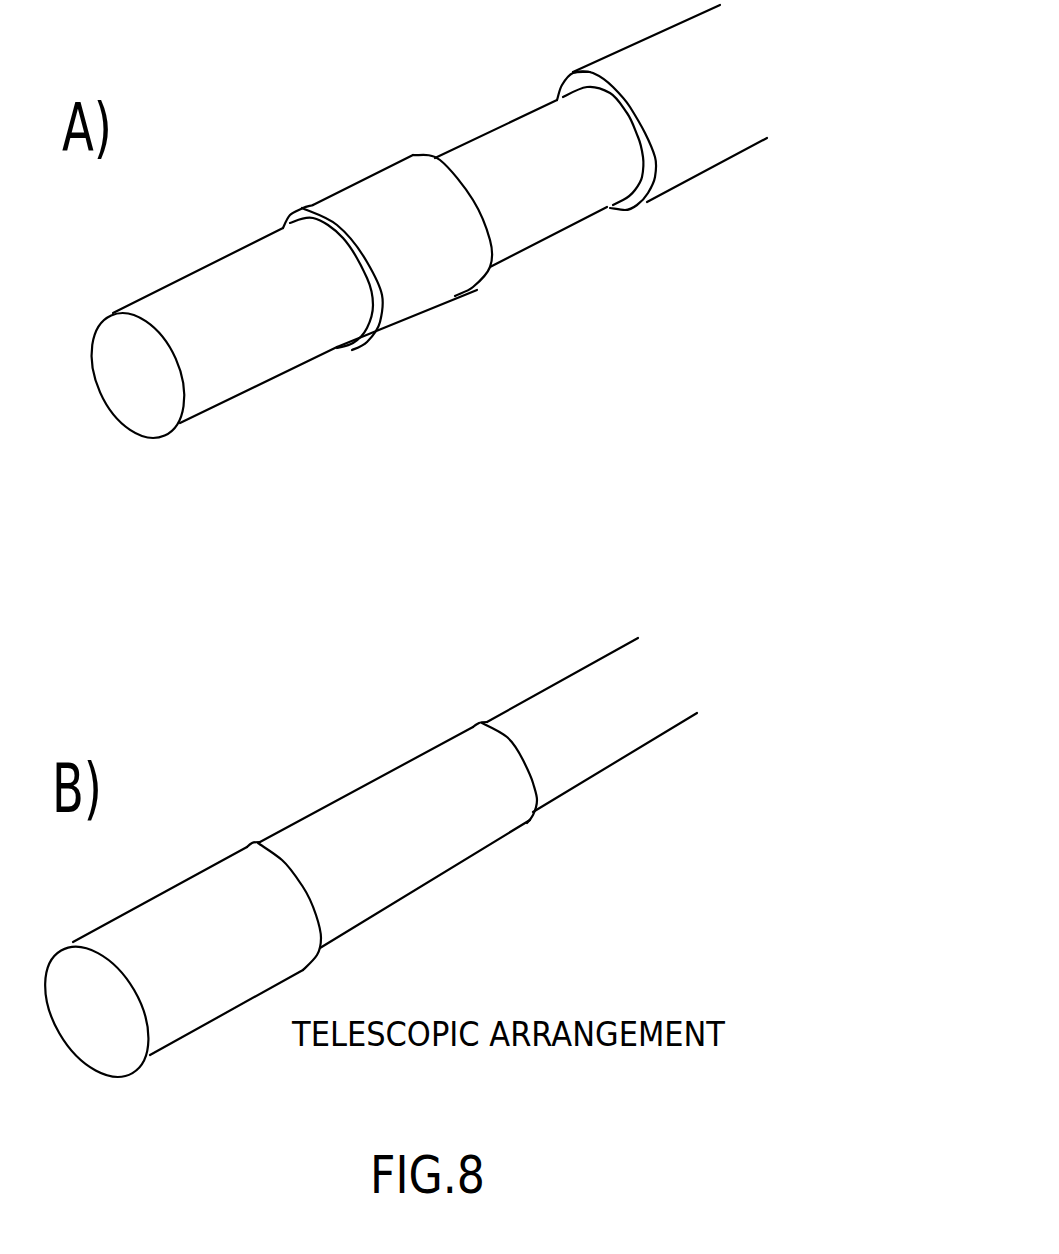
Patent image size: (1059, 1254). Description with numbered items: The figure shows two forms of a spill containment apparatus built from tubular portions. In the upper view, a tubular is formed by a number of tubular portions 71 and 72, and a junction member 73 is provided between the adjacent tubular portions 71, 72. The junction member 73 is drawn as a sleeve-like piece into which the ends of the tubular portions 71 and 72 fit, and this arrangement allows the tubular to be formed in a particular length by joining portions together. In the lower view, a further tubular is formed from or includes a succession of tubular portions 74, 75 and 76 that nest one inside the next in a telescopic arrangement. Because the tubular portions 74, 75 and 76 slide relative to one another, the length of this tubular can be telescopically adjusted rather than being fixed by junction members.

In FIG. 8A, the tubular portion 71 is at (223, 267).
In FIG. 8A, the tubular portion 72 is at (510, 148).
In FIG. 8A, the junction member 73 is at (387, 203).
In FIG. 8B, the tubular portion 74 is at (178, 907).
In FIG. 8B, the tubular portion 75 is at (370, 815).
In FIG. 8B, the tubular portion 76 is at (553, 710).